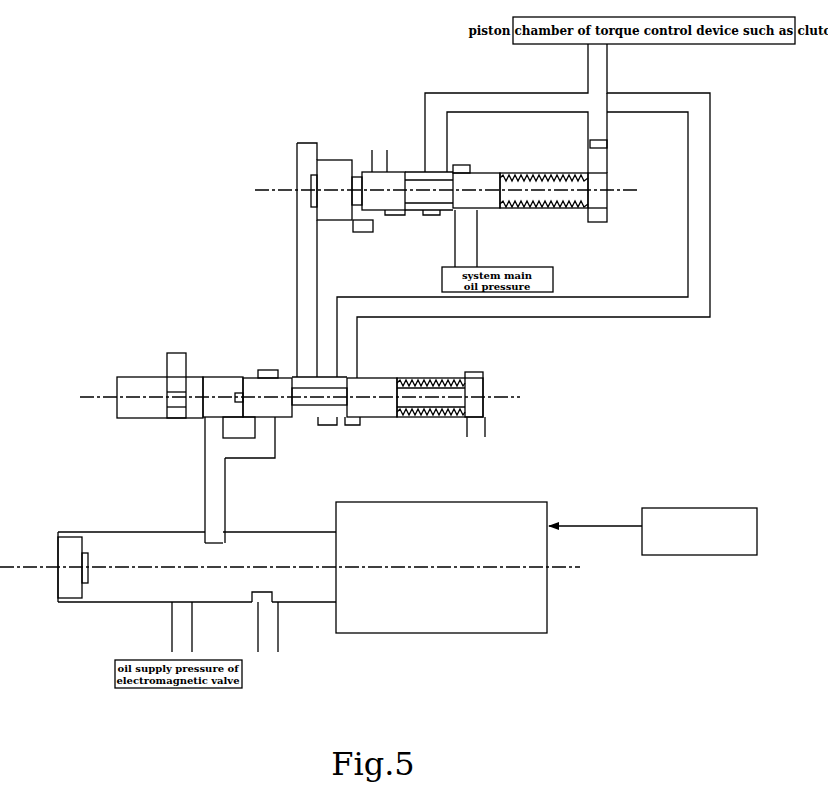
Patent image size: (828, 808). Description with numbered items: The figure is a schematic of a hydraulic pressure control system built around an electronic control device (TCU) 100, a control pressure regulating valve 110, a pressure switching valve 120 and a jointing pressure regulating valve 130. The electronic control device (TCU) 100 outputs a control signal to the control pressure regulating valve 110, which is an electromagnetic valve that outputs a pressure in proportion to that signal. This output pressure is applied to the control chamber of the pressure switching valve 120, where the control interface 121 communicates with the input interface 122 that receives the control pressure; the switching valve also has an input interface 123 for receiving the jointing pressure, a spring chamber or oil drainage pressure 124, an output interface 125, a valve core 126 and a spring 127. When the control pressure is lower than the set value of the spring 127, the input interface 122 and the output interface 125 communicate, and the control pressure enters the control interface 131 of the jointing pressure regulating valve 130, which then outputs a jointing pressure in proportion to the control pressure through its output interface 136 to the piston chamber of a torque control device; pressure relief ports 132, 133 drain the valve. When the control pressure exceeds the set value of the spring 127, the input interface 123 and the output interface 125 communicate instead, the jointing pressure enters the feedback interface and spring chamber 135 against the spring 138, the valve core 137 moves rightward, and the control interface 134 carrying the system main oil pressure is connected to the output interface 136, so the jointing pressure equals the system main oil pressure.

The electronic control device (TCU) 100 is at (658, 493).
The control pressure regulating valve 110 is at (307, 609).
The pressure switching valve 120 is at (130, 414).
The control interface 121 is at (252, 428).
The input interface 122 is at (248, 356).
The input interface 123 is at (386, 377).
The spring chamber or oil drainage pressure 124 is at (486, 375).
The output interface 125 is at (296, 436).
The valve core 126 is at (373, 389).
The spring 127 is at (520, 448).
The jointing pressure regulating valve 130 is at (417, 222).
The control interface 131 is at (292, 171).
The pressure relief port 132 is at (345, 245).
The pressure relief port 133 is at (383, 221).
The control interface 134 is at (493, 167).
The jointing pressure feedback interface and spring chamber 135 is at (635, 223).
The output interface 136 is at (413, 251).
The valve core 137 is at (452, 170).
The spring 138 is at (563, 223).